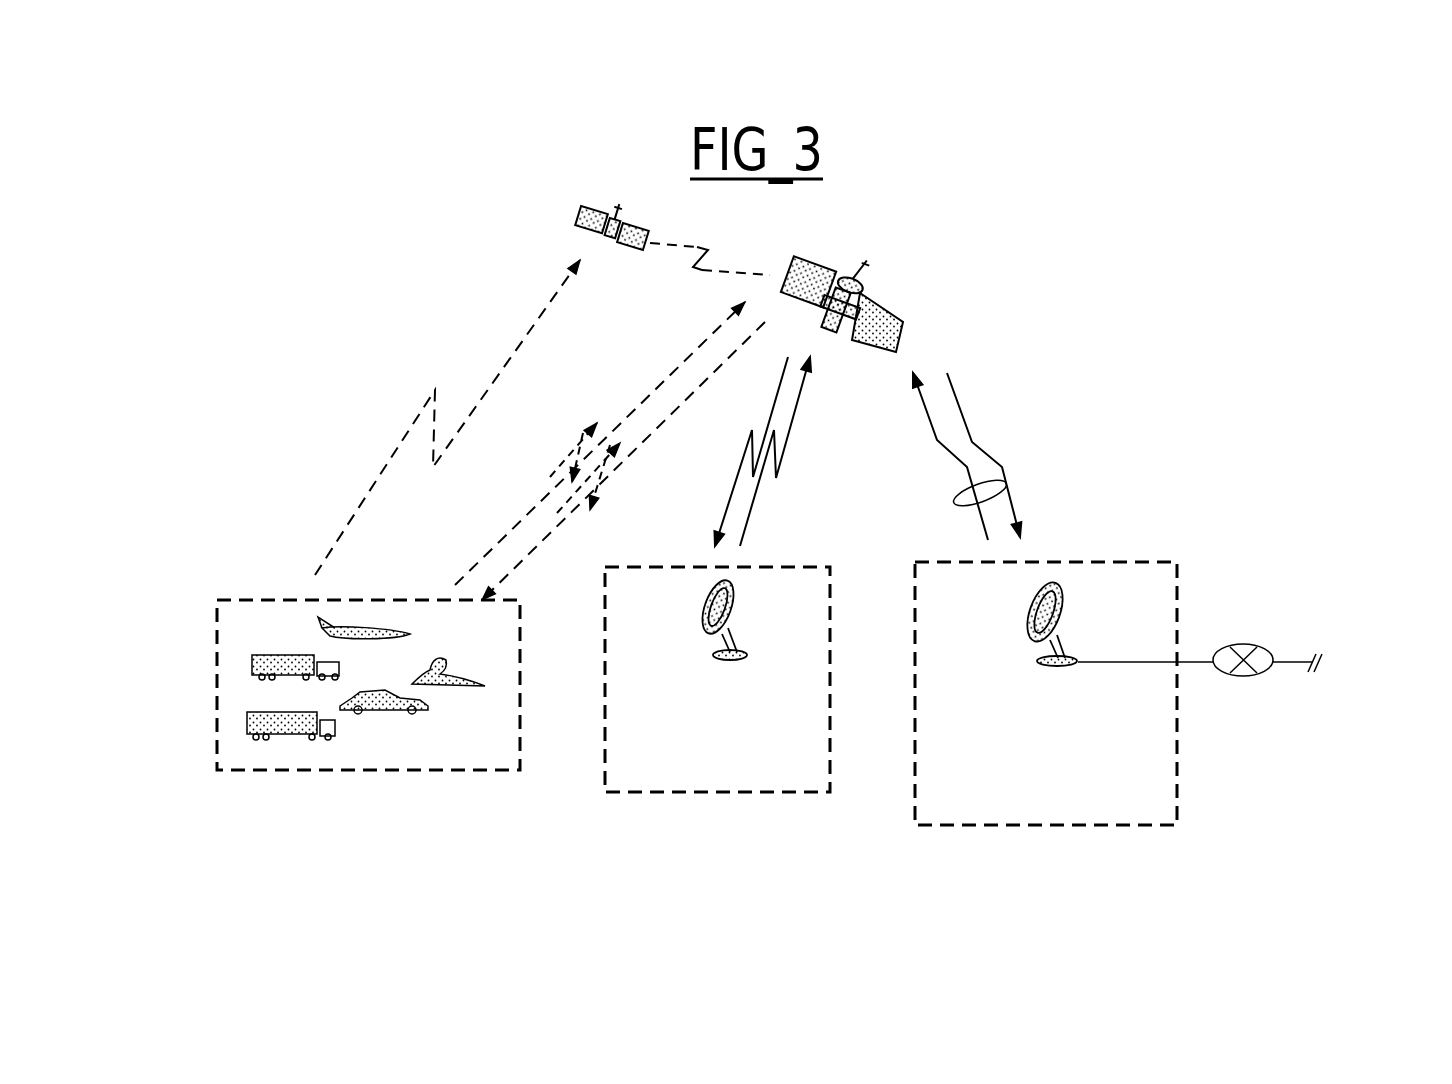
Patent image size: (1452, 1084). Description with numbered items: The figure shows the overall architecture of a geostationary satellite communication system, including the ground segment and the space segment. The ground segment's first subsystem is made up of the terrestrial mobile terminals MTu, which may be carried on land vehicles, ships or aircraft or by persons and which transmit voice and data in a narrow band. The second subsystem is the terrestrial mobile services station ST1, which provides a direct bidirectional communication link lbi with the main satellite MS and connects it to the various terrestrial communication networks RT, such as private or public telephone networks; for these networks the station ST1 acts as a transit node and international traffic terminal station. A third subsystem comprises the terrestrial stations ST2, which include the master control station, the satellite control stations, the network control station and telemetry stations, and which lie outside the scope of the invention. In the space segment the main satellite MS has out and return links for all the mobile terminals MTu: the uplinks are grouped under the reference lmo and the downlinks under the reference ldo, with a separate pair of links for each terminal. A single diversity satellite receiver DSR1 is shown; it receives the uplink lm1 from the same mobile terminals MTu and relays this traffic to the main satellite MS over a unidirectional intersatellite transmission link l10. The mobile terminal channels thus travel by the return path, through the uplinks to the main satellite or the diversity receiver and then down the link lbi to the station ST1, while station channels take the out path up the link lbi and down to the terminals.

The diversity satellite receiver DSR1 is at (574, 216).
The main satellite MS is at (905, 320).
The unidirectional intersatellite transmission link l10 is at (686, 277).
The uplink between mobile terminals and diversity satellite receiver lm1 is at (387, 461).
The uplinks between mobile terminals and main satellite lmo is at (535, 494).
The downlinks from main satellite to mobile terminals ldo is at (647, 450).
The bidirectional direct transmission link lbi is at (995, 488).
The terrestrial mobile terminals MTu is at (228, 768).
The terrestrial stations ST2 is at (677, 793).
The terrestrial mobile services station ST1 is at (940, 825).
The terrestrial communication networks RT is at (1250, 638).